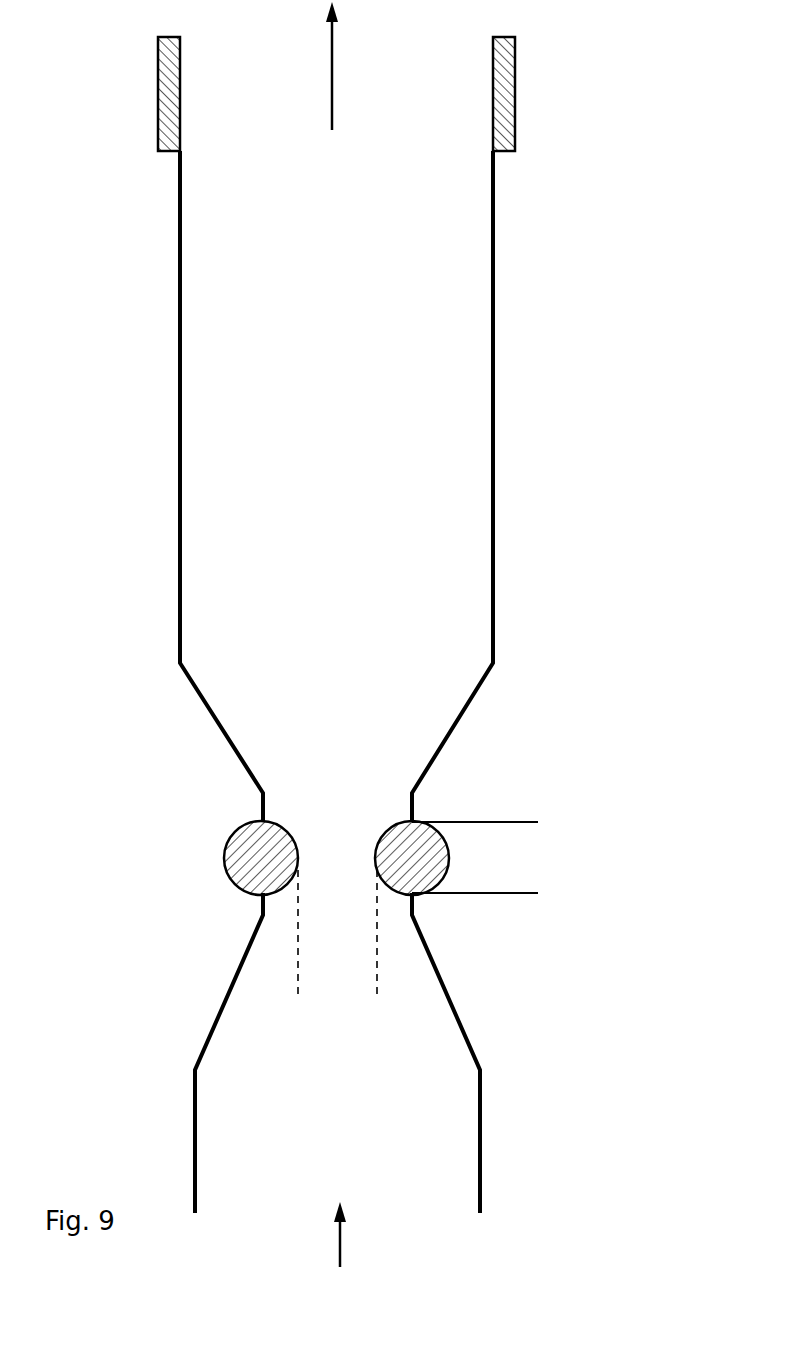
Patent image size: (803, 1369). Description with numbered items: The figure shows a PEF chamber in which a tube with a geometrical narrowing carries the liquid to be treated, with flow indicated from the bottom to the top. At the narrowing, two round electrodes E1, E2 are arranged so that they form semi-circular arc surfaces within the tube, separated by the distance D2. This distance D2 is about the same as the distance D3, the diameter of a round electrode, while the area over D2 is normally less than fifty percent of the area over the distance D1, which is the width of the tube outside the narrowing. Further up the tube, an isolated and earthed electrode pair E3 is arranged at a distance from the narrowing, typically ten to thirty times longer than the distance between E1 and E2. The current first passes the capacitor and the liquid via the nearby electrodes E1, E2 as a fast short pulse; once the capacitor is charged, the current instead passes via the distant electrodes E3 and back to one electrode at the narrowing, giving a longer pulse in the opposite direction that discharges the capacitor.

The round electrode E1 is at (203, 879).
The round electrode E2 is at (452, 800).
The isolated electrode pair E3 is at (593, 92).
The width of the tube outside the geometrical narrowing D1 is at (463, 1173).
The distance between electrodes E1 and E2 D2 is at (363, 968).
The electrode diameter D3 is at (523, 879).